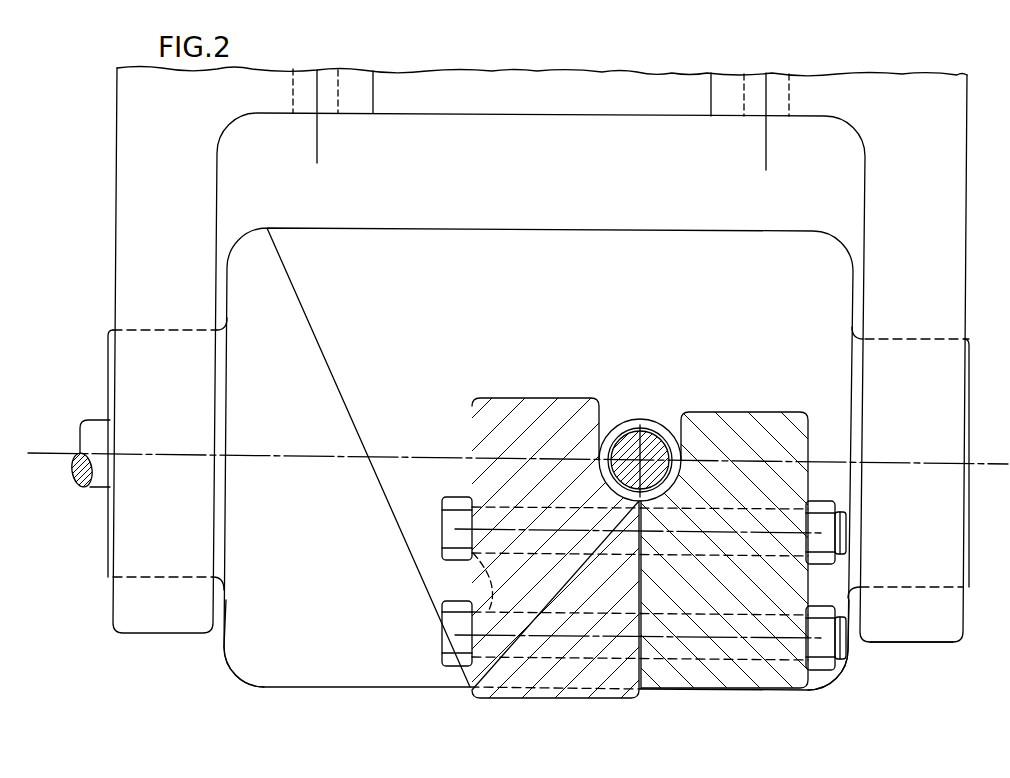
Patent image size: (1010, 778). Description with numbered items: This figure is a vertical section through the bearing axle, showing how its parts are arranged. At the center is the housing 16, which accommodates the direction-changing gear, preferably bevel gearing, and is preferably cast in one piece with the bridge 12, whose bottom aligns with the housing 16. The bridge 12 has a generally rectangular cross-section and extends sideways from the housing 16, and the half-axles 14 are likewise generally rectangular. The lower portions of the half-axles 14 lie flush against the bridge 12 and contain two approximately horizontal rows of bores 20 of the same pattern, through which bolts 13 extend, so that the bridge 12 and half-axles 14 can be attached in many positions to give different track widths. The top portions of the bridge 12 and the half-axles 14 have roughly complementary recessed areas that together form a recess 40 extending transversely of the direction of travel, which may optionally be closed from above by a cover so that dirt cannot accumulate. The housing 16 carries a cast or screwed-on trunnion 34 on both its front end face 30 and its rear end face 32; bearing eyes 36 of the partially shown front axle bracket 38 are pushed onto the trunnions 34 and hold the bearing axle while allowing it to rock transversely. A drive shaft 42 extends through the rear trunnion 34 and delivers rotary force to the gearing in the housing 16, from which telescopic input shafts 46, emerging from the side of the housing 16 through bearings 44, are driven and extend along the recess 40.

The bridge 12 is at (768, 412).
The bolts 13 is at (455, 528).
The half-axles 14 is at (508, 398).
The housing 16 is at (470, 285).
The bores 20 is at (472, 590).
The front end face 30 is at (848, 652).
The rear end face 32 is at (222, 640).
The trunnion 34 is at (108, 522).
The bearing eyes 36 is at (940, 643).
The front axle bracket 38 is at (516, 117).
The recess 40 is at (658, 403).
The drive shaft 42 is at (85, 490).
The bearings 44 is at (618, 418).
The telescopic input shafts 46 is at (657, 447).